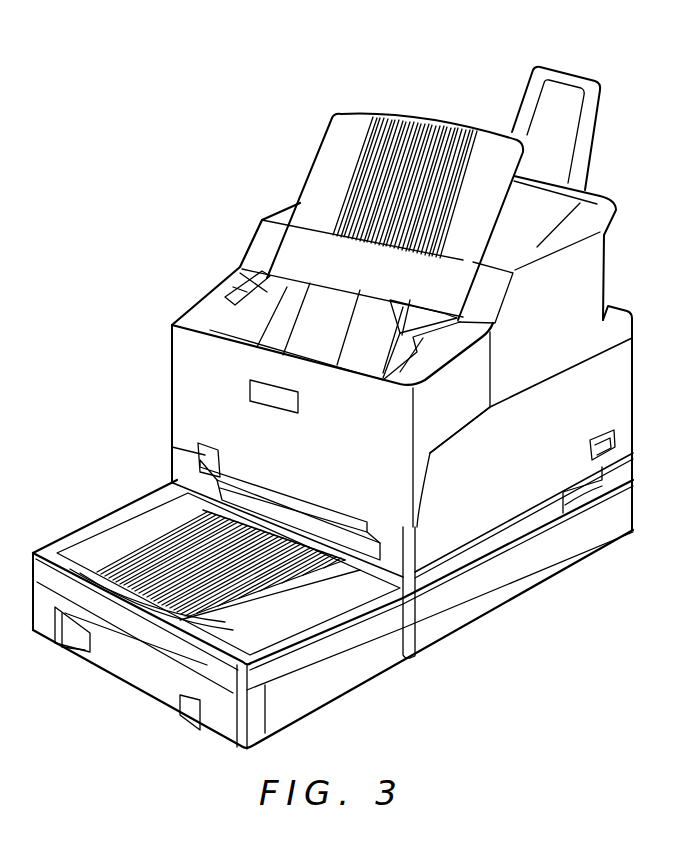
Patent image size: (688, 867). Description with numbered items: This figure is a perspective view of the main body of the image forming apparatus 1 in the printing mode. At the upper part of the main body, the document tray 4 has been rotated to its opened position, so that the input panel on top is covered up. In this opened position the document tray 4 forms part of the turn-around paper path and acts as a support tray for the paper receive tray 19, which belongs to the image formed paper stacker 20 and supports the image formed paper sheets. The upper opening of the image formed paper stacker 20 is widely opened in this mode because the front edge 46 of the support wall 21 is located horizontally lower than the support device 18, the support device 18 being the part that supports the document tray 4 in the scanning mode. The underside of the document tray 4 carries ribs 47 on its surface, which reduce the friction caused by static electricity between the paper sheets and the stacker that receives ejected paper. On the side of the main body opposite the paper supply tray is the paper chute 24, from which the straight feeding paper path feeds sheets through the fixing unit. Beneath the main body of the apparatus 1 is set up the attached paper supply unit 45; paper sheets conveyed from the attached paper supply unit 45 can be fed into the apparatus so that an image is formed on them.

The image-forming apparatus 1 is at (635, 408).
The document tray 4 is at (382, 189).
The support device 18 is at (270, 275).
The paper receive tray 19 is at (288, 292).
The image formed paper stacker 20 is at (272, 340).
The support wall 21 is at (190, 420).
The paper chute 24 is at (237, 493).
The attached paper supply unit 45 is at (457, 620).
The front edge 46 is at (260, 357).
The ribs 47 is at (415, 113).